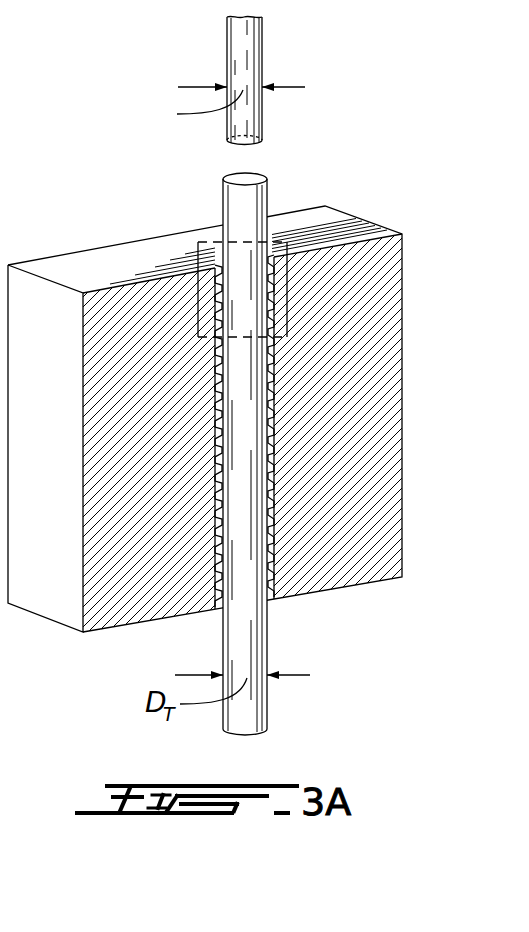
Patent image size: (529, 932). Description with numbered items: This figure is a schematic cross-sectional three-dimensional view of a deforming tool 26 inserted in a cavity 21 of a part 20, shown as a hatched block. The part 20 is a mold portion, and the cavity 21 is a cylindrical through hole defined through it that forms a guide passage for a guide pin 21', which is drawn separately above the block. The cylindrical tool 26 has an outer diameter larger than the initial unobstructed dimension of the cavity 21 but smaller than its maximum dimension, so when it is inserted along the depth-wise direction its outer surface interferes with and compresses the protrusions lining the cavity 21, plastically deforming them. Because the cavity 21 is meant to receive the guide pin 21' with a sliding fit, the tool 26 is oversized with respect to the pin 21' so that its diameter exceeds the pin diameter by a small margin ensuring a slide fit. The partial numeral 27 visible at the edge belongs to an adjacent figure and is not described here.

The part 20 is at (82, 231).
The cavity 21 is at (187, 382).
The guide pin 21' is at (237, 80).
The deforming tool 26 is at (278, 178).
The adjacent figure numeral 27 is at (515, 713).